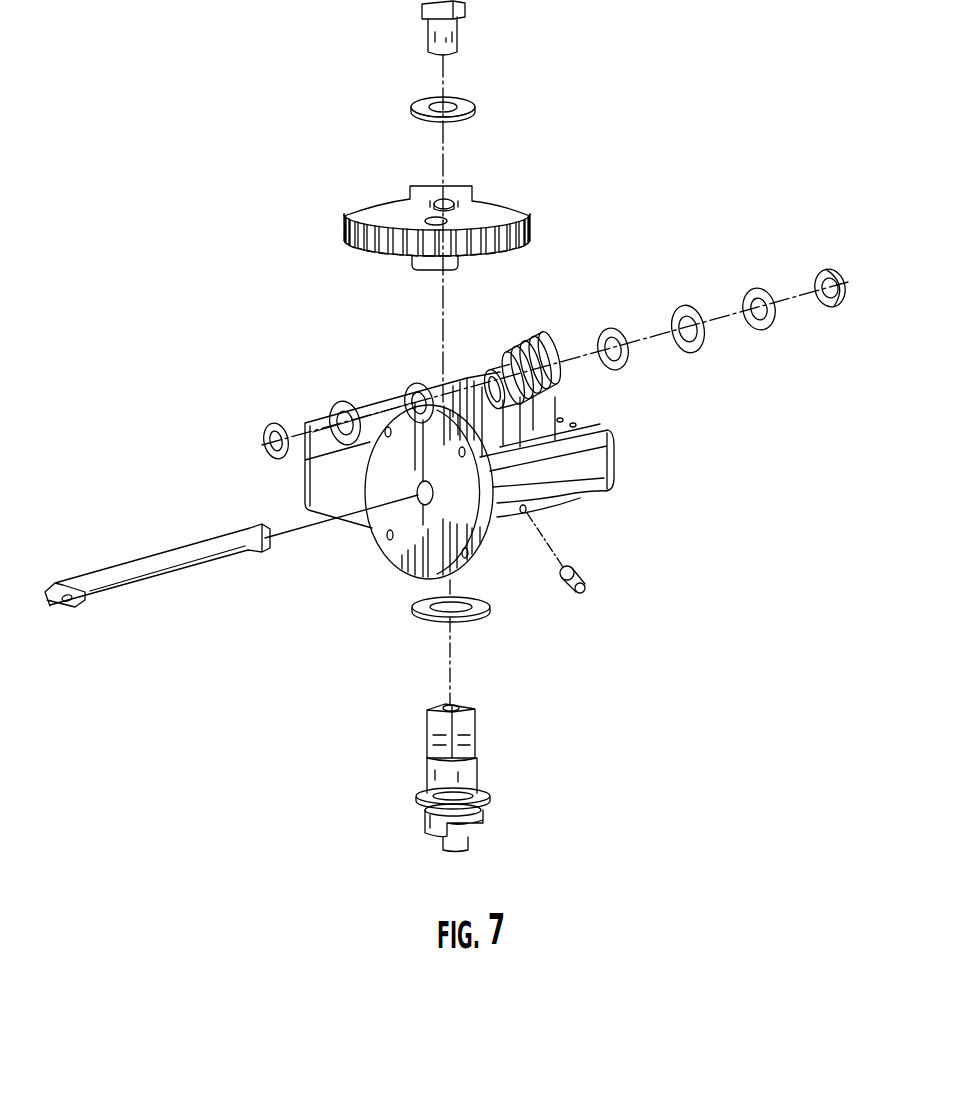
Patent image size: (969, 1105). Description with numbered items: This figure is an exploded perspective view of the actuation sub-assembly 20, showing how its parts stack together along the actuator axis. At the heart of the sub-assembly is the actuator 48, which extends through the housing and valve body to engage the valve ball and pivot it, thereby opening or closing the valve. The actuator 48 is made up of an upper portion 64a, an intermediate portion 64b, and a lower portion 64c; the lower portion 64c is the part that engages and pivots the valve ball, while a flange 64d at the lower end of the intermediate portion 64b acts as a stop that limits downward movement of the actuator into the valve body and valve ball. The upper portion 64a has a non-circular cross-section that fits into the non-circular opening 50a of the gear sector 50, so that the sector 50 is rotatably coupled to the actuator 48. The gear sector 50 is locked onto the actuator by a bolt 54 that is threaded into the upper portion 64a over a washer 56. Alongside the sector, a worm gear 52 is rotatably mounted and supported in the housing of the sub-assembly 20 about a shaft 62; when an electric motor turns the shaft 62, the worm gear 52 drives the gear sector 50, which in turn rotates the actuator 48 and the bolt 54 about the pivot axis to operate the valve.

The actuation sub-assembly 20 is at (619, 465).
The actuator 48 is at (488, 754).
The gear sector 50 is at (482, 184).
The non-circular opening 50a is at (432, 203).
The worm gear 52 is at (542, 336).
The bolt 54 is at (428, 34).
The washer 56 is at (462, 108).
The shaft 62 is at (140, 587).
The upper portion 64a is at (466, 722).
The intermediate portion 64b is at (478, 780).
The lower portion 64c is at (484, 828).
The flange 64d is at (418, 798).